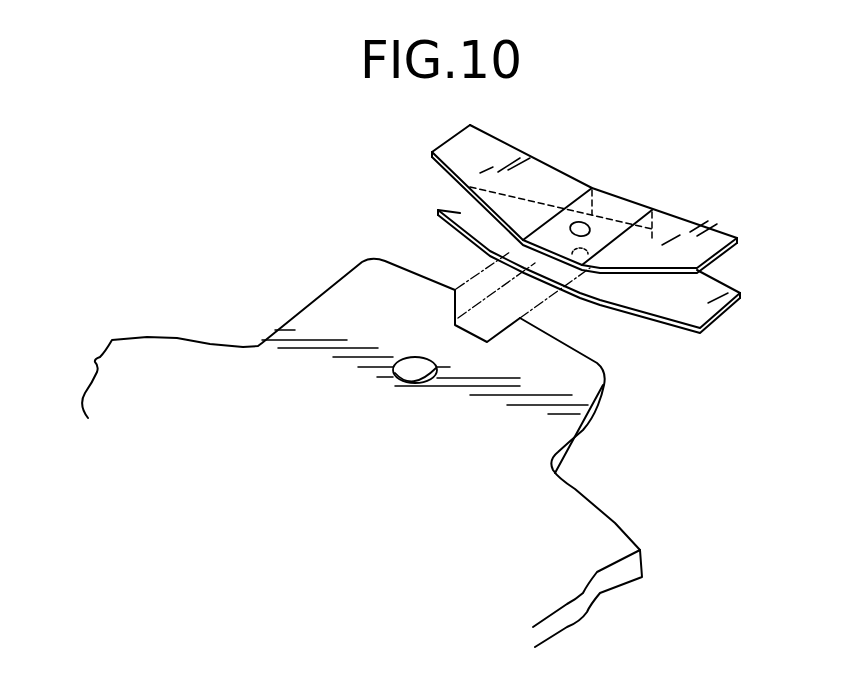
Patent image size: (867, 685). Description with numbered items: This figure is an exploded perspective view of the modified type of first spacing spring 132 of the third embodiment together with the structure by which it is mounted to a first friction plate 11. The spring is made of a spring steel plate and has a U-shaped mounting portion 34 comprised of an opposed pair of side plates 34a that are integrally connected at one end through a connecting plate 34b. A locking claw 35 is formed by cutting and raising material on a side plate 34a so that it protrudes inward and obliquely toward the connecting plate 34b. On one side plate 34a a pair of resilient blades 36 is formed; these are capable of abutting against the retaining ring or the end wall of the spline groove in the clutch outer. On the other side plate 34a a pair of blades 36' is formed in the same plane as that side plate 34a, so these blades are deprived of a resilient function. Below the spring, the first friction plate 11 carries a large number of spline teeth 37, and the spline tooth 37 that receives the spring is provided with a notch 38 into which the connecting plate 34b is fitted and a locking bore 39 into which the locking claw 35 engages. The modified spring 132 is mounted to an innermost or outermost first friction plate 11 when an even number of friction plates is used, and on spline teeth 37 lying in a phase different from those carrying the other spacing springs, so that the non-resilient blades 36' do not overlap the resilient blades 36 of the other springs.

The first friction plate 11 is at (604, 529).
The modified type of first spacing spring 132 is at (640, 190).
The U-shaped mounting portion 34 is at (633, 210).
The side plate 34a is at (618, 208).
The connecting plate 34b is at (652, 229).
The locking claw 35 is at (577, 222).
The resilient blade 36 is at (599, 186).
The blade deprived of resilient function 36' is at (601, 252).
The spline tooth 37 is at (590, 426).
The notch 38 is at (445, 320).
The locking bore 39 is at (413, 386).